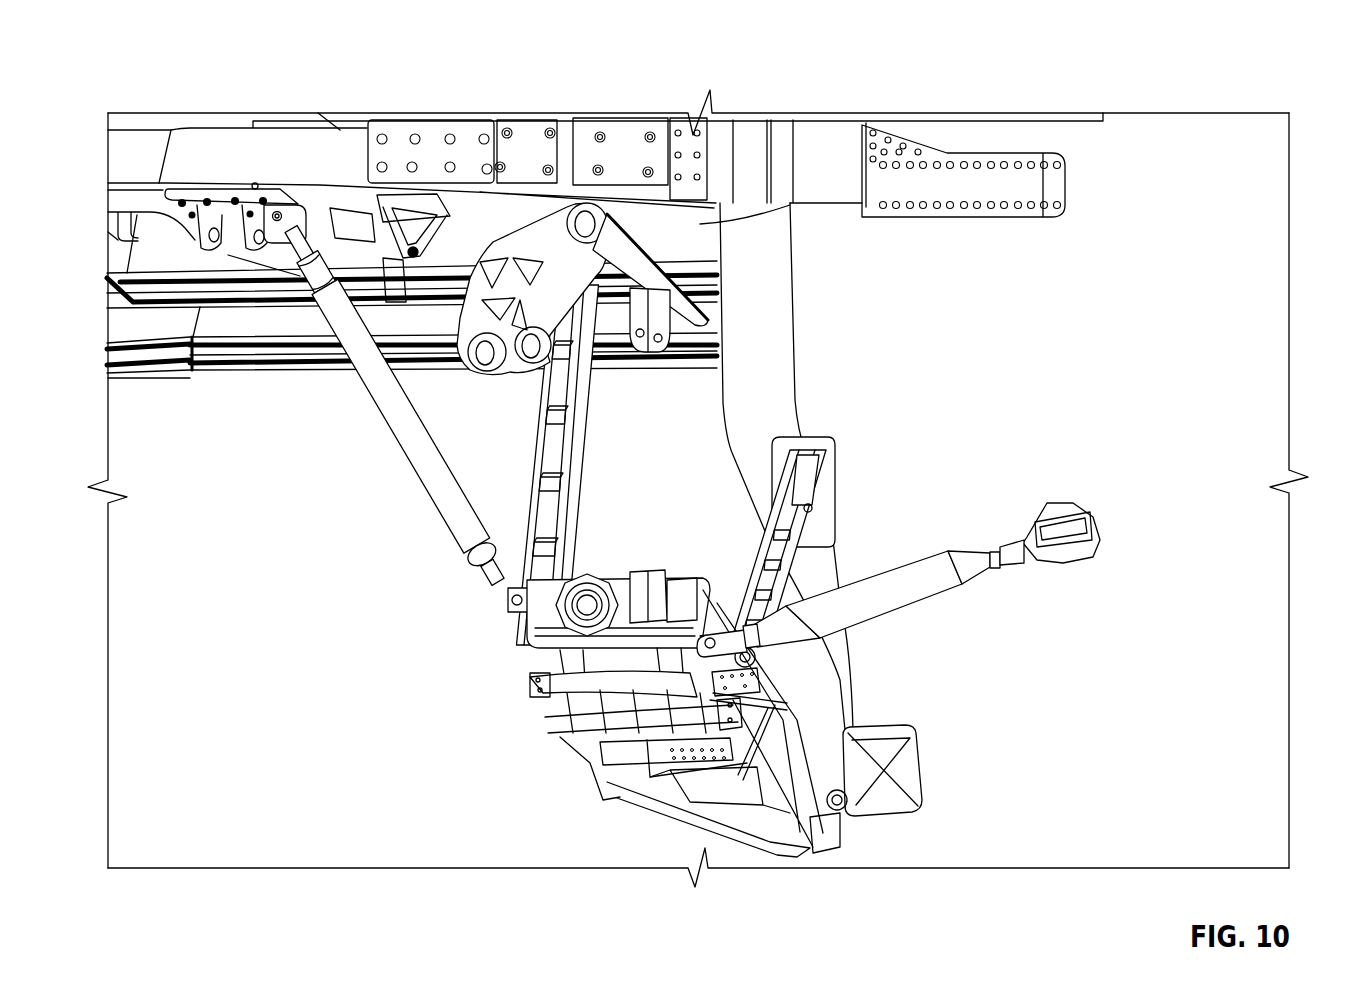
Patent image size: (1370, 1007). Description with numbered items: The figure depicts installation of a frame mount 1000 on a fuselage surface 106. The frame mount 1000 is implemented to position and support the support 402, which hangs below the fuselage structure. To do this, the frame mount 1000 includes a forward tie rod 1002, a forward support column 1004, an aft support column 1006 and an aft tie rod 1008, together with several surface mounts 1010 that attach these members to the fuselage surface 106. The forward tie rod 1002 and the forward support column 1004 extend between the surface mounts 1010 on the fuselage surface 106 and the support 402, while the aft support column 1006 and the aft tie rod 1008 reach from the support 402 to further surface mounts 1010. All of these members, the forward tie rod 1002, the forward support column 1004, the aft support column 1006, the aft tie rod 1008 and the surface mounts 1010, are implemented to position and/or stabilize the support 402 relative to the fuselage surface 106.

The fuselage surface 106 is at (1271, 303).
The support 402 is at (587, 747).
The frame mount 1000 is at (649, 753).
The forward tie rod 1002 is at (400, 418).
The forward support column 1004 is at (560, 514).
The aft support column 1006 is at (812, 547).
The aft tie rod 1008 is at (923, 588).
The surface mounts 1010 is at (293, 190).